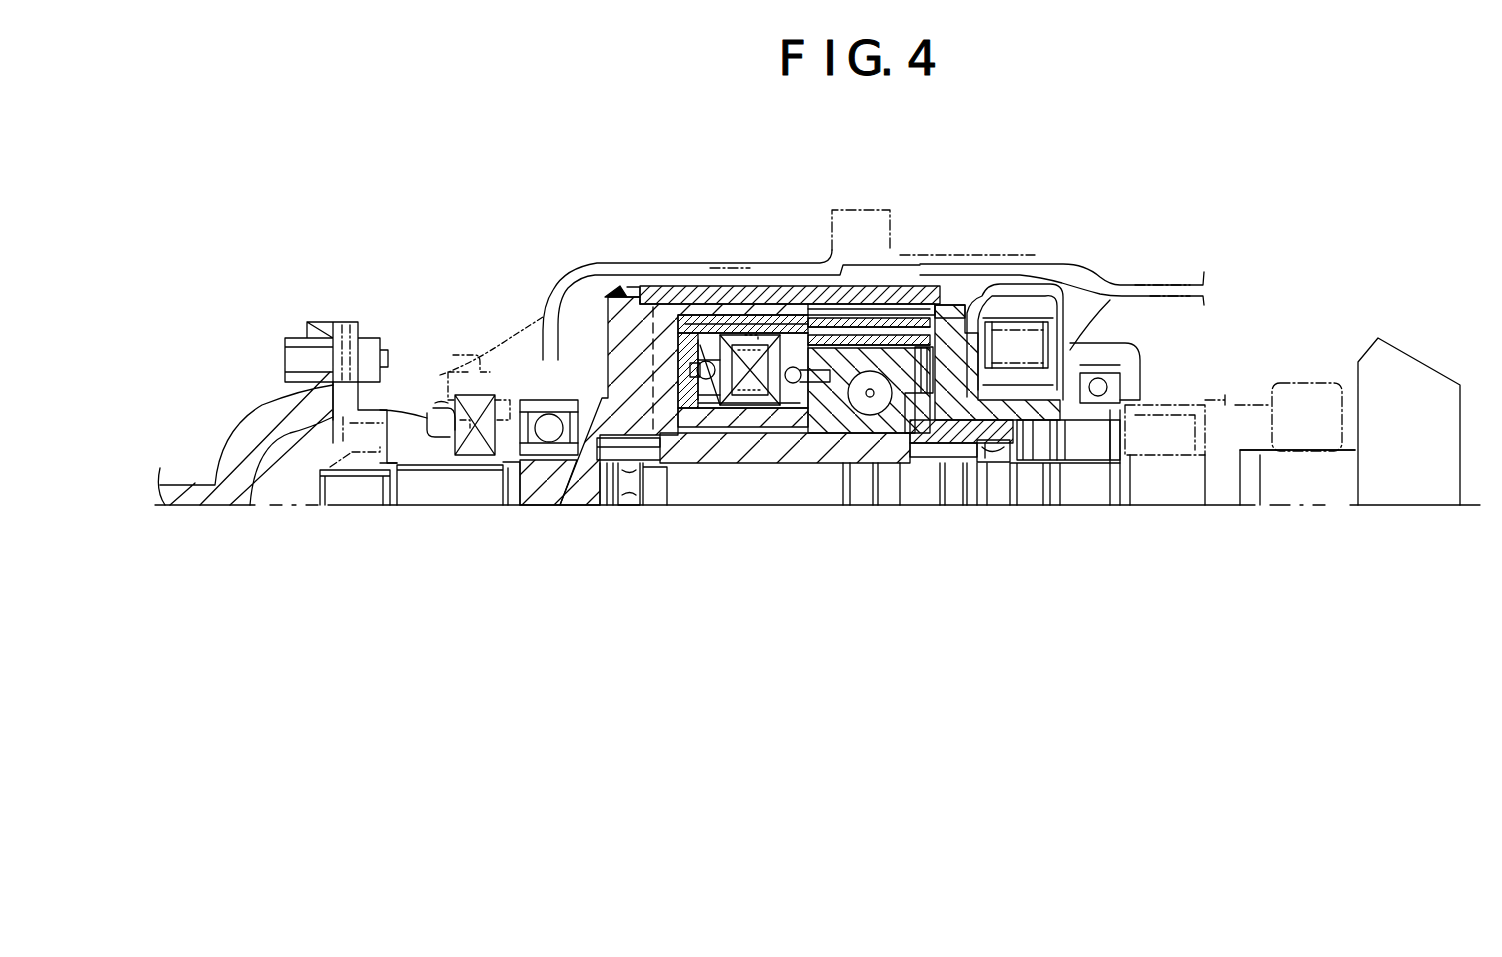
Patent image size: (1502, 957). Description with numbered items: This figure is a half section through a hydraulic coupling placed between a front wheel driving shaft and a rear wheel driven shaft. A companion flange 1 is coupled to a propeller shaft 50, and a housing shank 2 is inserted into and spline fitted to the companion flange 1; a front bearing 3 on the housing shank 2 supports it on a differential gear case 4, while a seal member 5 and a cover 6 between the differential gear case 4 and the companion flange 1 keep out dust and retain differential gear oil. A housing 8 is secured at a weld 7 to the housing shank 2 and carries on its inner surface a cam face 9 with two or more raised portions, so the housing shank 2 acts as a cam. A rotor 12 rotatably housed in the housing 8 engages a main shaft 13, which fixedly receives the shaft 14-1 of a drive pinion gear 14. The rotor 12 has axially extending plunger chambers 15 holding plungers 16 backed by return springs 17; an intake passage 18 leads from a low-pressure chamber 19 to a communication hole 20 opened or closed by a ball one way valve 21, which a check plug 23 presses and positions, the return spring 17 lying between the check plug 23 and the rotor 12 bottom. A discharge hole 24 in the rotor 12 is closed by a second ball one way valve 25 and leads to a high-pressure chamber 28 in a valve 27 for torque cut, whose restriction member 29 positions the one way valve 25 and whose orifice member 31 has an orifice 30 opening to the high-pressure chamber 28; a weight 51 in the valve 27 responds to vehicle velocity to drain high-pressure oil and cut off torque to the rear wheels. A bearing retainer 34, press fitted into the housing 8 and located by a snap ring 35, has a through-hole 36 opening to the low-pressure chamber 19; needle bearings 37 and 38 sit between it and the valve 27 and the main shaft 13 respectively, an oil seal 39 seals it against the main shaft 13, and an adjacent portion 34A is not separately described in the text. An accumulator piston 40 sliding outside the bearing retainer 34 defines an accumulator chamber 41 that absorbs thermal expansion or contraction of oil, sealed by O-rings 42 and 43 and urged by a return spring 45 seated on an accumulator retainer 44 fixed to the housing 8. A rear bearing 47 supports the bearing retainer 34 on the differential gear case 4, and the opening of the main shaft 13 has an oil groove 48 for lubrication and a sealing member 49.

The companion flange 1 is at (357, 418).
The housing shank 2 is at (541, 482).
The front bearing 3 is at (520, 402).
The differential gear case 4 is at (556, 290).
The seal member 5 is at (478, 395).
The cover 6 is at (433, 402).
The weld 7 is at (620, 293).
The housing 8 is at (640, 300).
The cam face 9 is at (623, 510).
The rotor 12 is at (707, 286).
The main shaft 13 is at (1000, 465).
The drive pinion gear 14 is at (1408, 375).
The shaft of drive pinion gear 14-1 is at (1308, 493).
The plunger chamber 15 is at (712, 410).
The plunger 16 is at (698, 410).
The return spring 17 is at (772, 286).
The intake passage 18 is at (660, 286).
The low-pressure chamber 19 is at (853, 286).
The communication hole 20 is at (692, 430).
The one way valve for intake 21 is at (718, 286).
The check plug 23 is at (741, 286).
The discharge hole 24 is at (720, 430).
The one way valve for discharge 25 is at (792, 286).
The valve for torque cut 27 is at (822, 286).
The high-pressure chamber 28 is at (790, 385).
The restriction member 29 is at (895, 286).
The orifice 30 is at (855, 412).
The orifice member 31 is at (836, 465).
The bearing retainer 34 is at (957, 303).
The flange portion 34A is at (1062, 465).
The snap ring 35 is at (967, 303).
The through-hole 36 is at (925, 303).
The needle bearing 37 is at (882, 465).
The needle bearing 38 is at (905, 465).
The oil seal 39 is at (1022, 465).
The accumulator piston 40 is at (1070, 283).
The accumulator chamber 41 is at (1000, 293).
The O-ring 42 is at (1040, 256).
The O-ring 43 is at (943, 465).
The accumulator retainer 44 is at (1102, 352).
The return spring 45 is at (1083, 328).
The rear bearing 47 is at (1125, 362).
The oil groove 48 is at (580, 500).
The sealing member 49 is at (633, 507).
The propeller shaft 50 is at (262, 430).
The weight 51 is at (880, 286).